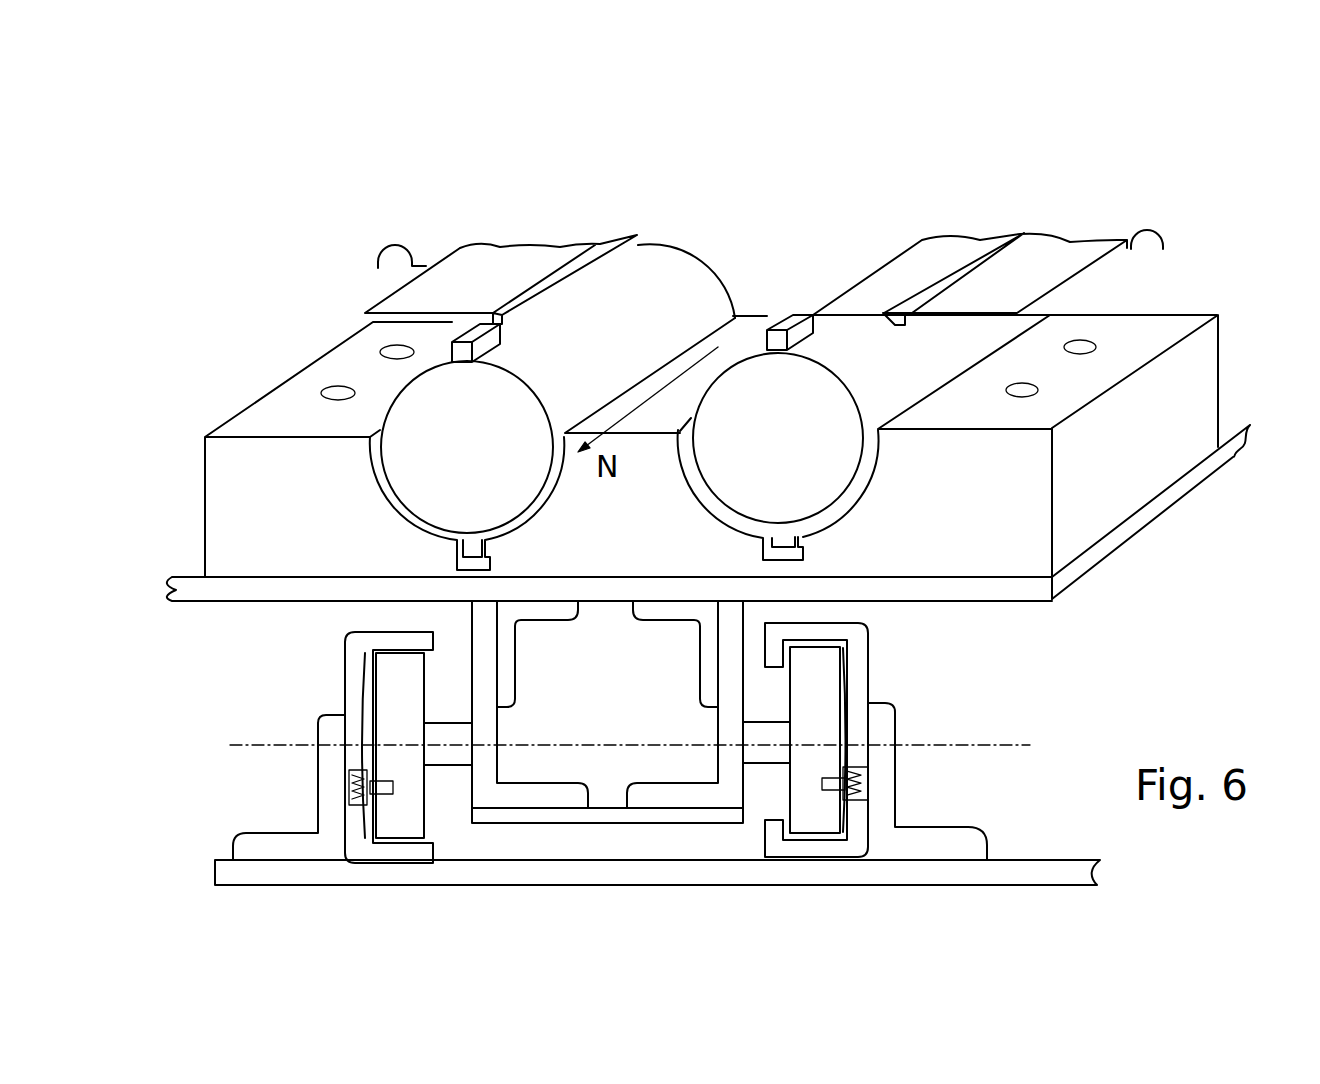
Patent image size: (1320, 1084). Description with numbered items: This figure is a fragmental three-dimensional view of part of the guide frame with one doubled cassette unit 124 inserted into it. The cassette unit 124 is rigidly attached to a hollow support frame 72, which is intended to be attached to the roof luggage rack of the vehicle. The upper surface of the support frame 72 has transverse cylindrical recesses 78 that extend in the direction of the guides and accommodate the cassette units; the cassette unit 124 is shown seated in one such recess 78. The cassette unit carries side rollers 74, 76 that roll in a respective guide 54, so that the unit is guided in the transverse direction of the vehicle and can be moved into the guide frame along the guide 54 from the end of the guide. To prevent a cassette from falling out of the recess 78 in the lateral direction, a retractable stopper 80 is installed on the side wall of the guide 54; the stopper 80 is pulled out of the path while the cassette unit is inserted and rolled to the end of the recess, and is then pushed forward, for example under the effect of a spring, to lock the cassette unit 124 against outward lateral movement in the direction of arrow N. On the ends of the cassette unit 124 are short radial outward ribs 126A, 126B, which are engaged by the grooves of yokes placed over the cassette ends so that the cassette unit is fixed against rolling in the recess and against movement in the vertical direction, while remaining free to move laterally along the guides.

The cassette unit 124 is at (563, 200).
The rib 126A is at (482, 322).
The rib 126B is at (790, 322).
The support frame 72 is at (1112, 548).
The transverse cylindrical recess 78 is at (857, 480).
The guide 54 is at (336, 652).
The side roller 74 is at (393, 756).
The side roller 76 is at (808, 700).
The retractable stopper 80 is at (862, 792).